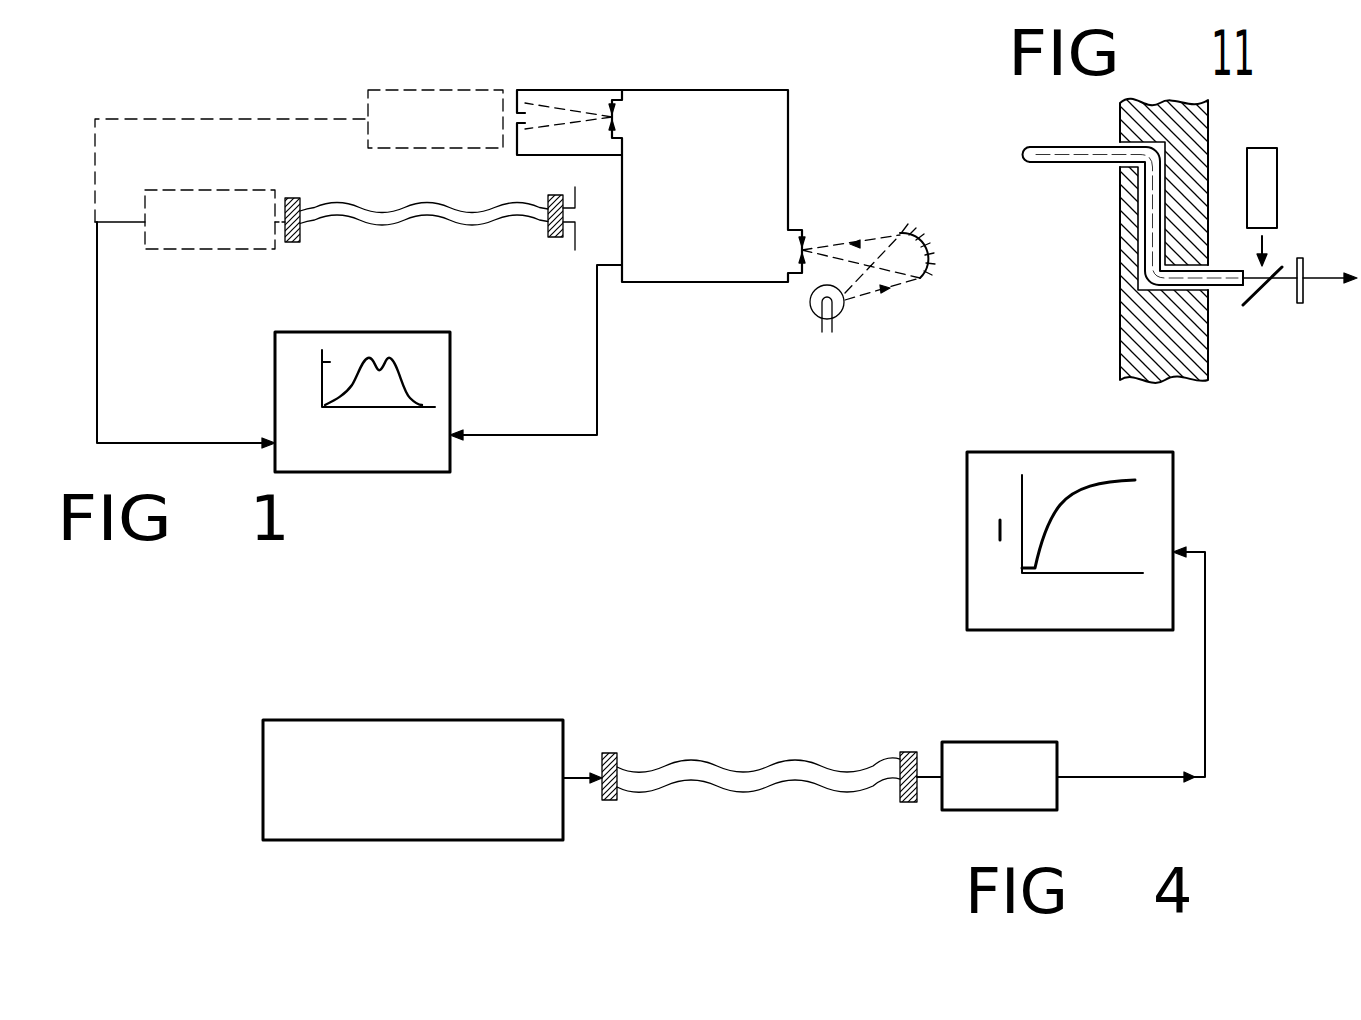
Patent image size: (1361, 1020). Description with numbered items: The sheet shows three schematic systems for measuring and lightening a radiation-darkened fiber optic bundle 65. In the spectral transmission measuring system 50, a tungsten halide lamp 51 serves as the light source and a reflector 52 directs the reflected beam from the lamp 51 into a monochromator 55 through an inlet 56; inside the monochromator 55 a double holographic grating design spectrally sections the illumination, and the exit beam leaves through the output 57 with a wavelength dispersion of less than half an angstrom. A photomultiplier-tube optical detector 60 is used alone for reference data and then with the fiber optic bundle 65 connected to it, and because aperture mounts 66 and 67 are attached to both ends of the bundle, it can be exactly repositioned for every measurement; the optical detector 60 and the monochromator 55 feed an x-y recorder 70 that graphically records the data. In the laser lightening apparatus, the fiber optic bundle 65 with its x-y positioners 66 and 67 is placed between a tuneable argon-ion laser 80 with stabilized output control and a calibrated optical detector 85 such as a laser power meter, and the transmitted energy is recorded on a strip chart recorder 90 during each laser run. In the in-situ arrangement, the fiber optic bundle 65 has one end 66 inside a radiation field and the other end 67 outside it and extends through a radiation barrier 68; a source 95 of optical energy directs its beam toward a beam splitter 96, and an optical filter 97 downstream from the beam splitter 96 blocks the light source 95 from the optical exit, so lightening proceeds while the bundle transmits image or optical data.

In FIG. 1, the system for spectral transmission measurements 50 is at (298, 106).
In FIG. 1, the tungsten halide lamp 51 is at (838, 307).
In FIG. 1, the reflector 52 is at (905, 243).
In FIG. 1, the monochromator 55 is at (770, 160).
In FIG. 1, the inlet 56 is at (797, 252).
In FIG. 1, the output 57 is at (618, 117).
In FIG. 1, the optical detector 60 is at (455, 90).
In FIG. 1, the fiber optic bundle 65 is at (377, 222).
In FIG. 11, the fiber optic bundle 65 is at (1083, 151).
In FIG. 4, the fiber optic bundle 65 is at (760, 787).
In FIG. 1, the aperture mount 66 is at (292, 244).
In FIG. 11, the aperture mount 66 is at (1028, 158).
In FIG. 4, the aperture mount 66 is at (608, 753).
In FIG. 1, the aperture mount 67 is at (556, 239).
In FIG. 11, the aperture mount 67 is at (1247, 274).
In FIG. 4, the aperture mount 67 is at (900, 755).
In FIG. 11, the radiation barrier 68 is at (1143, 304).
In FIG. 1, the x-y recorder 70 is at (437, 386).
In FIG. 4, the tuneable argon laser 80 is at (426, 728).
In FIG. 4, the optical detector 85 is at (975, 812).
In FIG. 4, the strip chart recorder 90 is at (965, 492).
In FIG. 11, the source of optical energy 95 is at (1268, 178).
In FIG. 11, the beam splitter 96 is at (1271, 268).
In FIG. 11, the optical filter 97 is at (1296, 297).